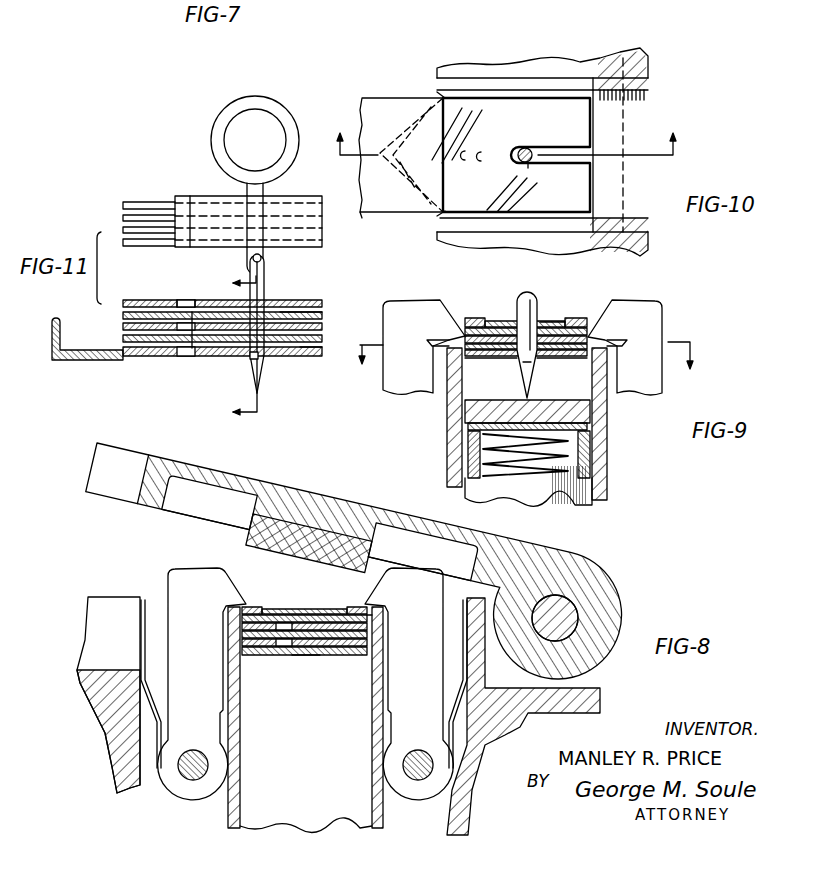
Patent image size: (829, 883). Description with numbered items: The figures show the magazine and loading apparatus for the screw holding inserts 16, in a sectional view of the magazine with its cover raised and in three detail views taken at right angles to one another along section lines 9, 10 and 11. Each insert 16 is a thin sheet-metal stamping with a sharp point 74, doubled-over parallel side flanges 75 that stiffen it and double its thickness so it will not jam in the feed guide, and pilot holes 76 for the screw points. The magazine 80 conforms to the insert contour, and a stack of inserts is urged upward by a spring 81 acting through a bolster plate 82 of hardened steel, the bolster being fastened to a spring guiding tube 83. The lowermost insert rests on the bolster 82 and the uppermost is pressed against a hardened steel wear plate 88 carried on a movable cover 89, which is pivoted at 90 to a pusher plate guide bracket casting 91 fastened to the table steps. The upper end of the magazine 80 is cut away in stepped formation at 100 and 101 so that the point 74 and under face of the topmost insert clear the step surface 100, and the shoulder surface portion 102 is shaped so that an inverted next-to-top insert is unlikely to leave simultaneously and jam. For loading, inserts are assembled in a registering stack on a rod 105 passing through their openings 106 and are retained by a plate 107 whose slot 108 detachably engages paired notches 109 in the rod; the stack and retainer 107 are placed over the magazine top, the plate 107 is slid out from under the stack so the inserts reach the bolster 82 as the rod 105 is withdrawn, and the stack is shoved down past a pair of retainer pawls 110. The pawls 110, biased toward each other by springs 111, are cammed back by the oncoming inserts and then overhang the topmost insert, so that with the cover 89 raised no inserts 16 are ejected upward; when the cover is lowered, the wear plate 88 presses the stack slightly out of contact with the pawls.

In FIG. 11, the section line 9— 9 is at (235, 347).
In FIG. 9, the section line 10— 10 is at (533, 366).
In FIG. 10, the section line 11— 11 is at (516, 133).
In FIG. 11, the screw holding insert 16 is at (167, 205).
In FIG. 9, the screw holding insert 16 is at (508, 318).
In FIG. 8, the screw holding insert 16 is at (287, 612).
In FIG. 11, the point 74 is at (123, 204).
In FIG. 11, the side flanges 75 is at (195, 299).
In FIG. 9, the side flanges 75 is at (482, 318).
In FIG. 8, the side flanges 75 is at (262, 606).
In FIG. 11, the pilot holes 76 is at (192, 360).
In FIG. 10, the pilot holes 76 is at (480, 166).
In FIG. 10, the magazine 80 is at (512, 72).
In FIG. 9, the magazine 80 is at (446, 443).
In FIG. 8, the magazine 80 is at (228, 810).
In FIG. 9, the spring 81 is at (573, 448).
In FIG. 9, the bolster plate 82 is at (572, 408).
In FIG. 9, the spring guiding tube 83 is at (590, 432).
In FIG. 8, the wear plate 88 is at (292, 545).
In FIG. 8, the cover 89 is at (313, 493).
In FIG. 8, the pivot 90 is at (576, 612).
In FIG. 8, the pusher plate guide bracket casting 91 is at (117, 720).
In FIG. 10, the step surface 100 is at (401, 212).
In FIG. 9, the step surface 100 is at (558, 358).
In FIG. 8, the step surface 100 is at (371, 622).
In FIG. 10, the stepped cut-away portion 101 is at (437, 100).
In FIG. 10, the shoulder surface portion 102 is at (360, 218).
In FIG. 11, the rod 105 is at (266, 264).
In FIG. 10, the rod 105 is at (532, 150).
In FIG. 9, the rod 105 is at (540, 286).
In FIG. 11, the openings 106 is at (281, 312).
In FIG. 9, the openings 106 is at (552, 318).
In FIG. 8, the openings 106 is at (300, 657).
In FIG. 11, the plate 107 is at (86, 358).
In FIG. 10, the plate 107 is at (361, 176).
In FIG. 9, the plate 107 is at (483, 358).
In FIG. 11, the slot 108 is at (302, 358).
In FIG. 10, the slot 108 is at (558, 163).
In FIG. 11, the paired notches 109 is at (250, 357).
In FIG. 10, the paired notches 109 is at (528, 168).
In FIG. 9, the paired notches 109 is at (526, 366).
In FIG. 9, the retainer pawls 110 is at (415, 310).
In FIG. 8, the retainer pawls 110 is at (215, 600).
In FIG. 8, the springs 111 is at (152, 673).